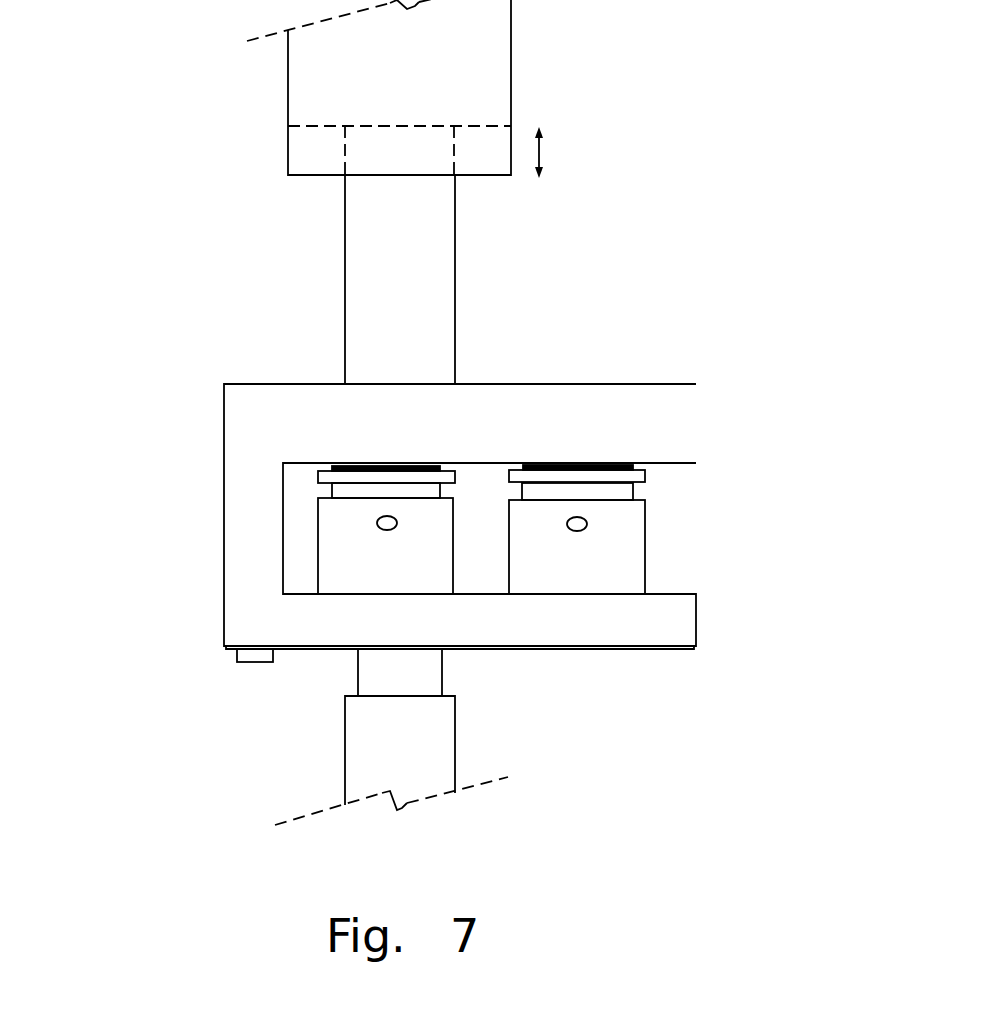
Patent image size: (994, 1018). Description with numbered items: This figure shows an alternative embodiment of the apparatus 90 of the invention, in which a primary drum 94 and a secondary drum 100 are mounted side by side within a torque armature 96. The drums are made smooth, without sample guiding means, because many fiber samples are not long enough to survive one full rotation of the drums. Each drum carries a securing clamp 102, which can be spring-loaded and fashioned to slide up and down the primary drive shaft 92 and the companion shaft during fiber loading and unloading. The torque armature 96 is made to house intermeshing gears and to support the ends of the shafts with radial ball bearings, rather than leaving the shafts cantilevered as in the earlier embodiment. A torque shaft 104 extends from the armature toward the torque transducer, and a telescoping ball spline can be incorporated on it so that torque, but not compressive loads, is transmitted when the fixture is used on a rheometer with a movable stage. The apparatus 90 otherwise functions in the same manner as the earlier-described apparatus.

The apparatus 90 is at (189, 750).
The primary drive shaft 92 is at (442, 670).
The primary drum 94 is at (318, 540).
The torque armature 96 is at (696, 421).
The secondary drum 100 is at (512, 78).
The securing clamp 102 is at (320, 472).
The torque shaft 104 is at (455, 308).